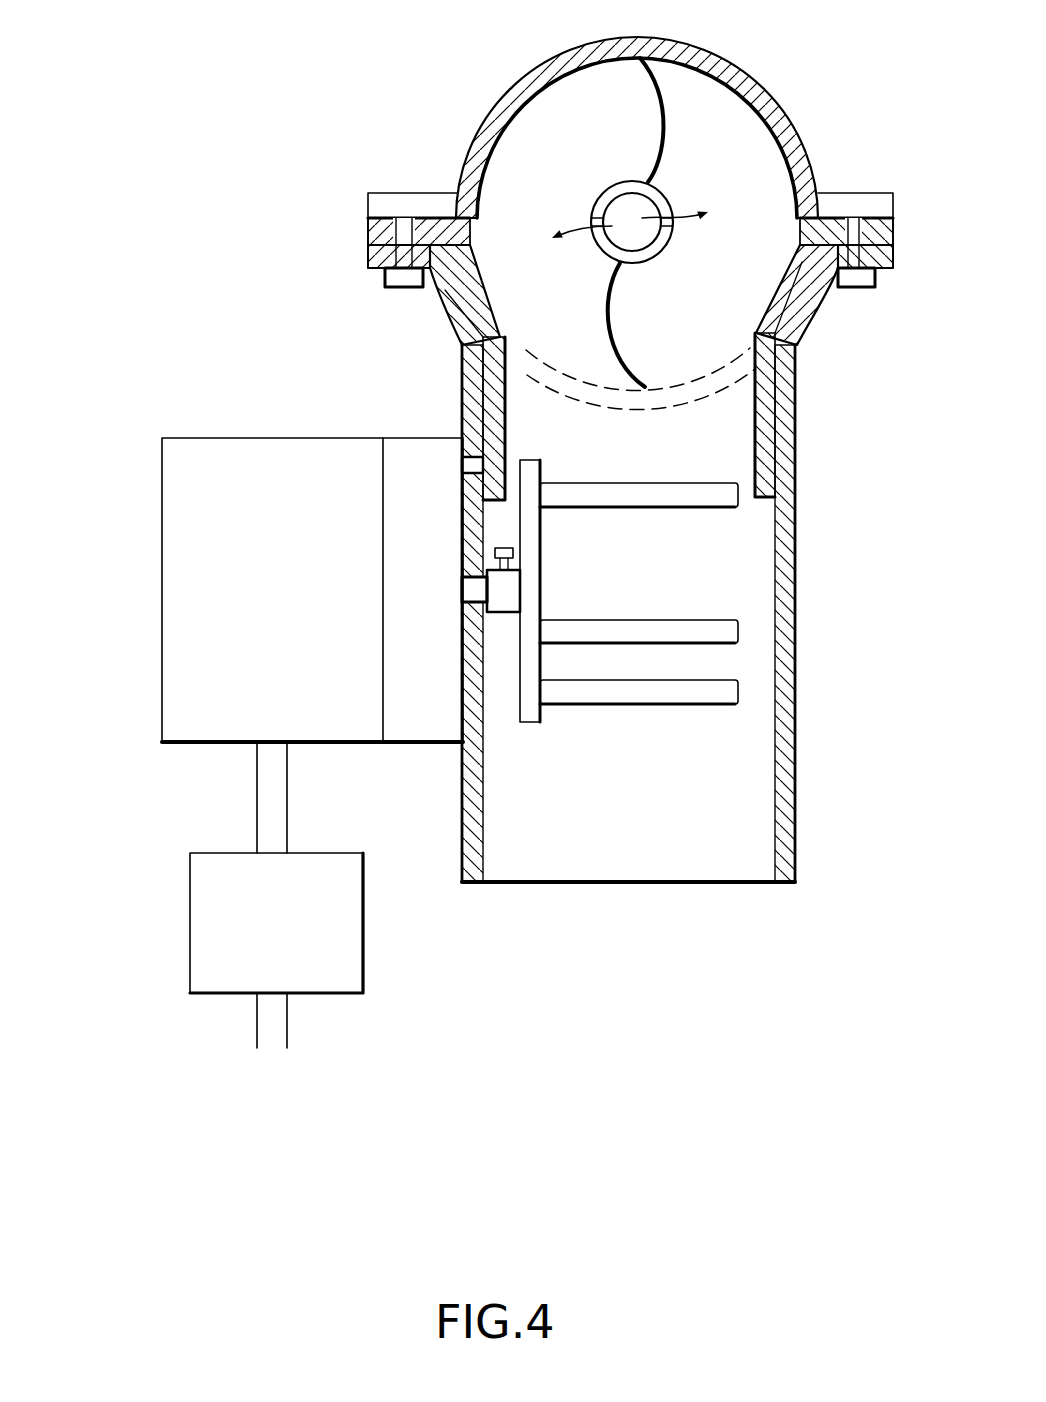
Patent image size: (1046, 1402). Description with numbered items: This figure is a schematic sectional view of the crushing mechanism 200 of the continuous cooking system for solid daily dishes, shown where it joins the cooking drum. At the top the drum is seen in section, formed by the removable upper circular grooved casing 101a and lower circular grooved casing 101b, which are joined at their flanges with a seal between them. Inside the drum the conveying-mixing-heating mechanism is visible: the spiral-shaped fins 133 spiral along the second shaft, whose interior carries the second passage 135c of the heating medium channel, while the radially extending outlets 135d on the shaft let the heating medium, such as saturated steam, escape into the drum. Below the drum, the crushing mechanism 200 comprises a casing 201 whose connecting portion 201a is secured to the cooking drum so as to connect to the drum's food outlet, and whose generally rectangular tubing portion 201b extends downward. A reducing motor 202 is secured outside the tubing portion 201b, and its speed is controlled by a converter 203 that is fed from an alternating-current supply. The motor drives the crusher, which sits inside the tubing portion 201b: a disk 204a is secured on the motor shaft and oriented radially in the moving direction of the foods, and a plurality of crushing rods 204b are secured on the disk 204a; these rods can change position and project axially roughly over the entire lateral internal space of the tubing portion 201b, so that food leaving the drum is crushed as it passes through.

The spiral-shaped fins 133 is at (668, 102).
The second passage 135c is at (617, 203).
The radially extending outlet 135d is at (639, 234).
The upper circular grooved casing 101a is at (775, 101).
The lower circular grooved casing 101b is at (820, 247).
The crushing mechanism 200 is at (267, 337).
The casing 201 is at (683, 613).
The connecting portion 201a is at (813, 320).
The tubing portion 201b is at (790, 600).
The reducing motor 202 is at (175, 695).
The converter 203 is at (202, 943).
The disk 204a is at (527, 722).
The crushing rods 204b is at (733, 689).